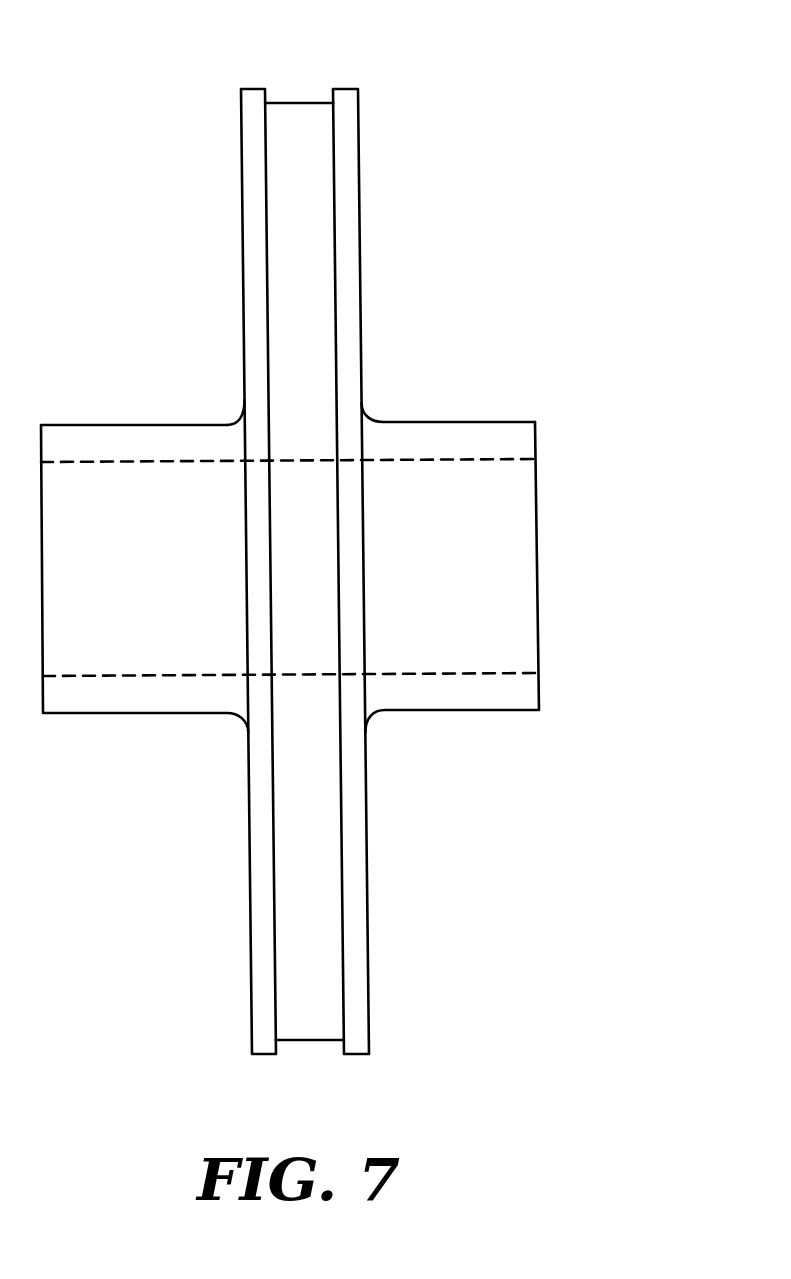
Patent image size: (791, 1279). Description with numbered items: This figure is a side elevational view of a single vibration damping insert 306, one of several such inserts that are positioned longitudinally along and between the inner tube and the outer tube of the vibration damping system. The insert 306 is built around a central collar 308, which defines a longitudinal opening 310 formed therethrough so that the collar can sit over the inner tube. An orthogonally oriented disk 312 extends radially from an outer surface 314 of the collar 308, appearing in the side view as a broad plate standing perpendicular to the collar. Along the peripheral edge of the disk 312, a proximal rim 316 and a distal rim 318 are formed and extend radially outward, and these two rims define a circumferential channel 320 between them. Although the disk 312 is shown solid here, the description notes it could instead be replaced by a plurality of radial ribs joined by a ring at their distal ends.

The vibration damping insert 306 is at (552, 130).
The central collar 308 is at (455, 420).
The longitudinal opening 310 is at (503, 545).
The disk 312 is at (362, 243).
The outer surface 314 is at (502, 420).
The proximal rim 316 is at (345, 143).
The distal rim 318 is at (252, 183).
The circumferential channel 320 is at (300, 93).